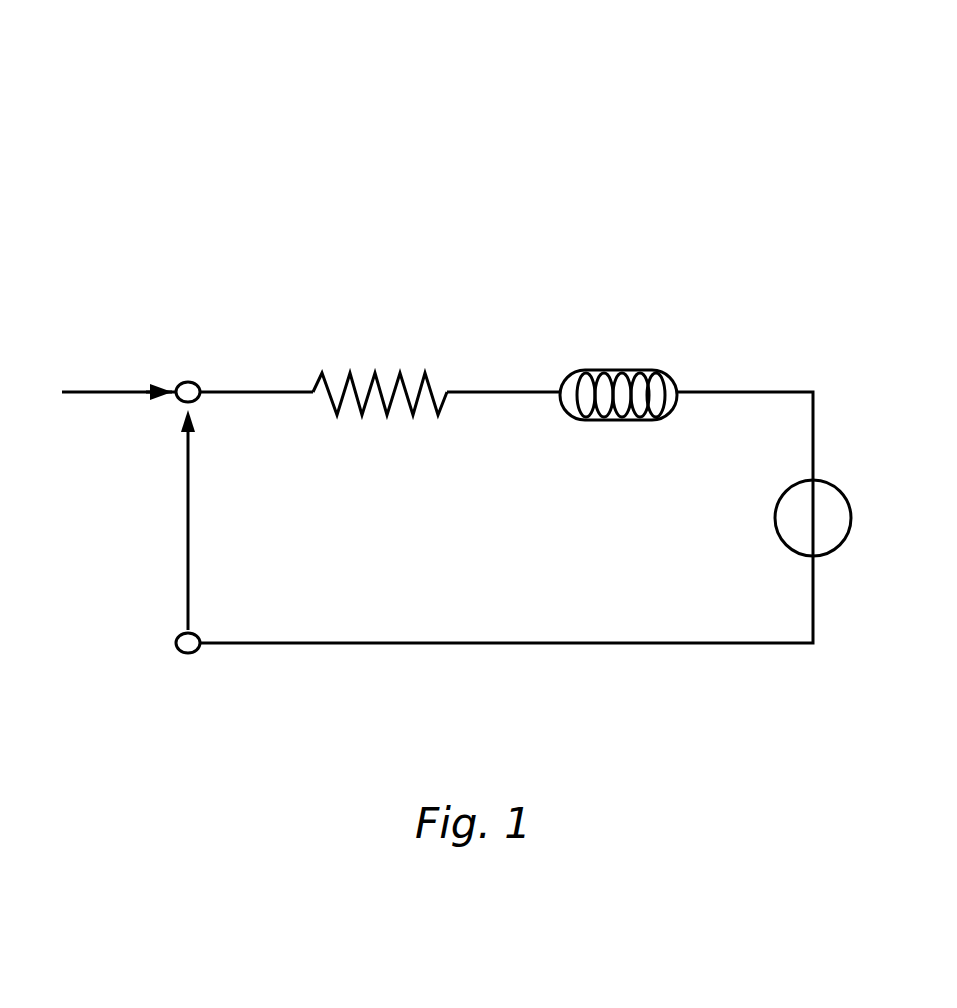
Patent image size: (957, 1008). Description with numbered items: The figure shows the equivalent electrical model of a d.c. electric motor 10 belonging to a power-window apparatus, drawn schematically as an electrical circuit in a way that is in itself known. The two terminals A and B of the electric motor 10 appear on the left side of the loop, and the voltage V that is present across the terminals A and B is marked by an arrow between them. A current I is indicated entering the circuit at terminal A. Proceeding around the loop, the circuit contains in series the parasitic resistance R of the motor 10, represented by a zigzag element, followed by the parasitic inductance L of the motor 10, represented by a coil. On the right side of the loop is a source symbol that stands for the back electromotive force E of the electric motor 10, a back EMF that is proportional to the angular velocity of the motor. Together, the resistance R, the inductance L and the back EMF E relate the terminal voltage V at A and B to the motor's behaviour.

The d.c. electric motor 10 is at (486, 387).
The parasitic resistance R is at (380, 370).
The parasitic inductance L is at (618, 373).
The back electromotive force E is at (876, 433).
The voltage V is at (173, 520).
The current I is at (138, 380).
The terminal A is at (188, 360).
The terminal B is at (188, 668).